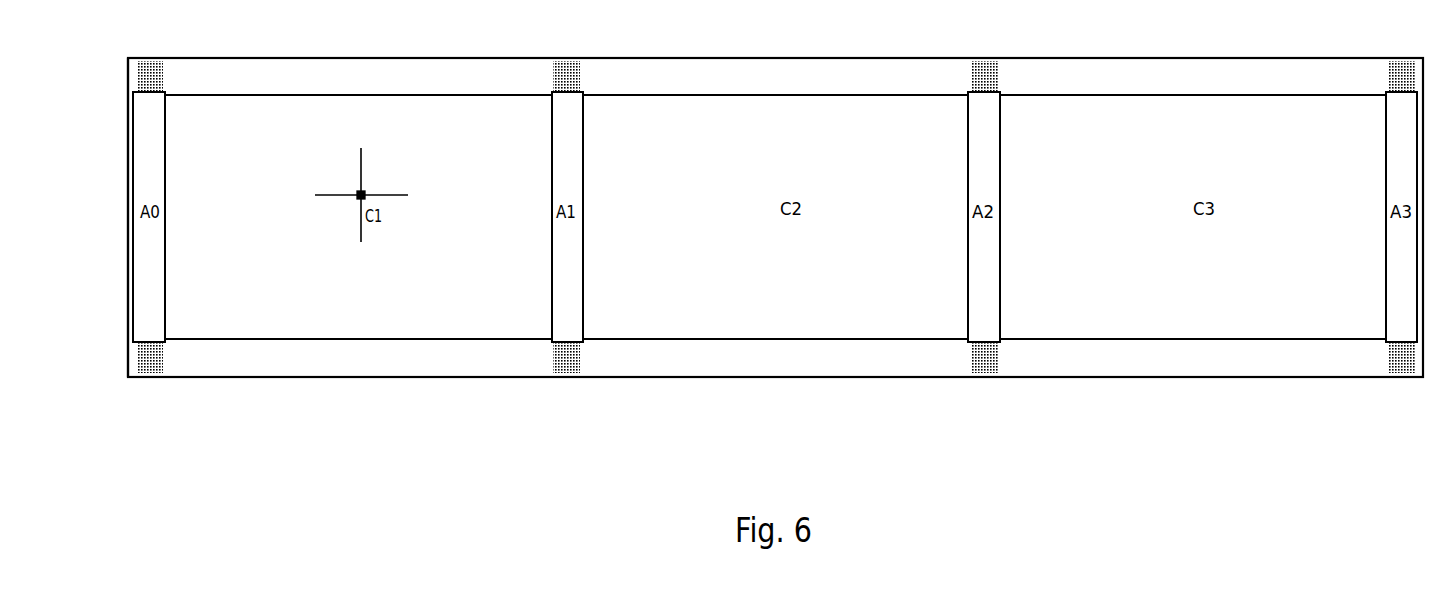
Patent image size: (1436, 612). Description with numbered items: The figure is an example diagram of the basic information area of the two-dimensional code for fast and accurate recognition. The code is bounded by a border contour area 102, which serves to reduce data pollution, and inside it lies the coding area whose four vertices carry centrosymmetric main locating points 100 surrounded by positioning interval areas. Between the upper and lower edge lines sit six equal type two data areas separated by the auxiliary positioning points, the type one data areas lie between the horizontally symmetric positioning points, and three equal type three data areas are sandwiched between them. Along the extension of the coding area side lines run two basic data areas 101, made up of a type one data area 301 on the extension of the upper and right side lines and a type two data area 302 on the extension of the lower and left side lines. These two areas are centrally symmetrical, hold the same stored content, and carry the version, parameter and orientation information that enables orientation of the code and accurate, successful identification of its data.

The main locating points 100 is at (151, 64).
The basic data area 101 is at (129, 158).
The border contour area 102 is at (129, 113).
The type I data area 301 is at (1403, 102).
The type II data area 302 is at (145, 250).